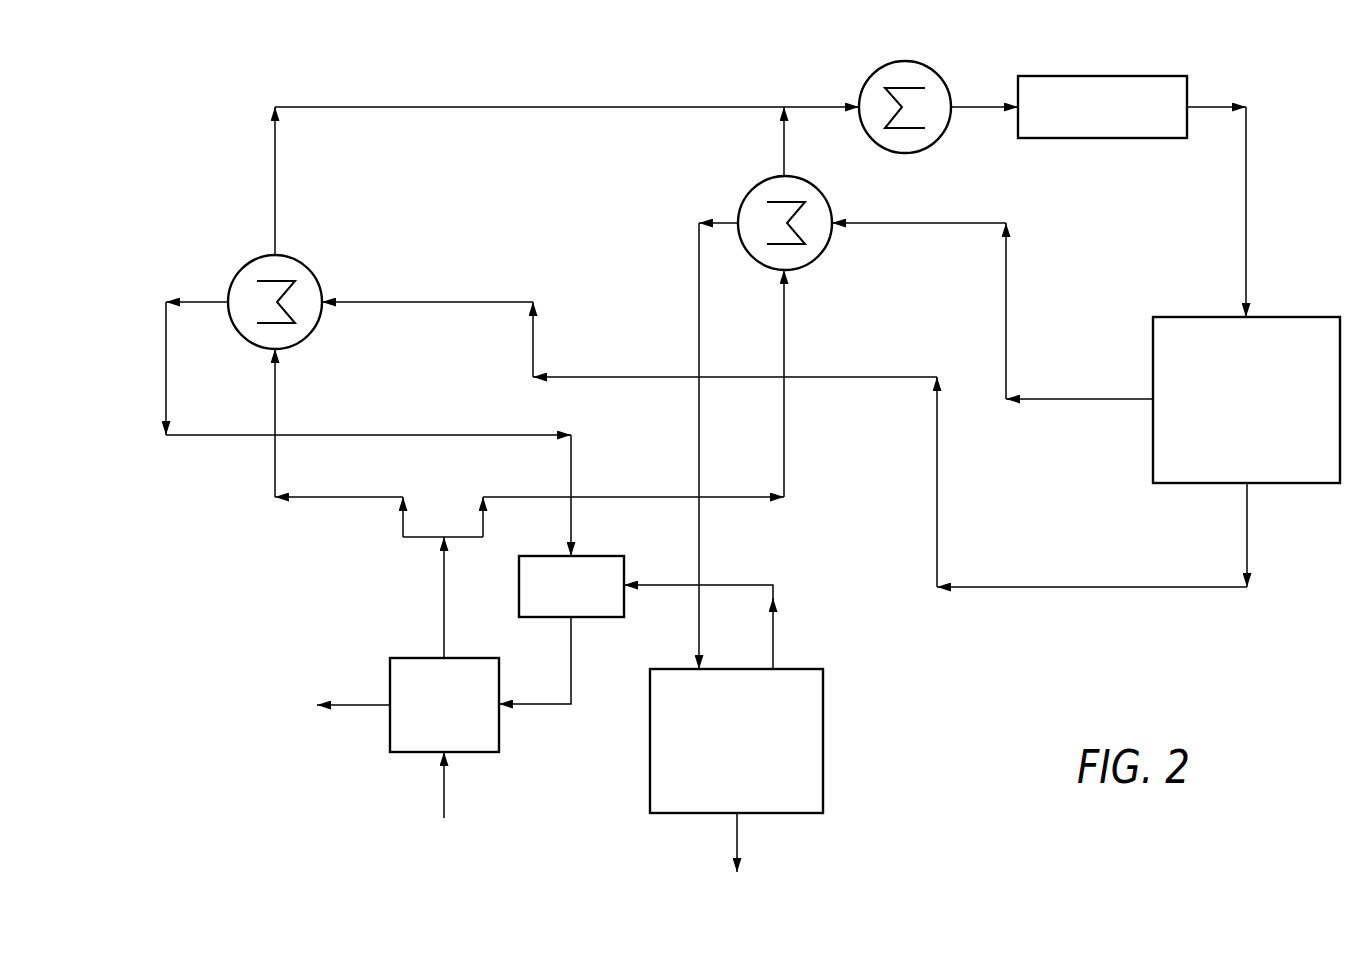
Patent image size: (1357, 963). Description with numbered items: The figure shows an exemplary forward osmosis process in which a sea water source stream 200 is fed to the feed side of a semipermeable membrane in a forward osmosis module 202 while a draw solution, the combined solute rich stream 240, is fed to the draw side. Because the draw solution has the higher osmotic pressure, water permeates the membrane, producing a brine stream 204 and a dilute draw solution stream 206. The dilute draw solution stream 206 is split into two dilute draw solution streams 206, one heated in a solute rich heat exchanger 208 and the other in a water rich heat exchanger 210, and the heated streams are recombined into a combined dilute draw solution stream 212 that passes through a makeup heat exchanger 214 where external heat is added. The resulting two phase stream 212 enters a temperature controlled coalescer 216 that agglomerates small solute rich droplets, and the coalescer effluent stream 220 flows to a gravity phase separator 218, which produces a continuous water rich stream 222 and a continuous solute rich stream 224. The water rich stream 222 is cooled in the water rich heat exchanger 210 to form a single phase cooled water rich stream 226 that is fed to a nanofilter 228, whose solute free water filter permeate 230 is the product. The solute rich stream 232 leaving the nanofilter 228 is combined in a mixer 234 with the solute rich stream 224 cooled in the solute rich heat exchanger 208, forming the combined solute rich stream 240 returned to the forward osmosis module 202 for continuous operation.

The sea water source stream 200 is at (444, 801).
The forward osmosis module 202 is at (444, 705).
The brine stream 204 is at (361, 703).
The dilute draw solution stream 206 is at (275, 392).
The solute rich heat exchanger 208 is at (240, 271).
The water rich heat exchanger 210 is at (825, 250).
The combined dilute draw solution stream 212 is at (822, 105).
The makeup heat exchanger 214 is at (905, 153).
The coalescer 216 is at (1102, 107).
The gravity phase separator 218 is at (1246, 400).
The coalescer effluent stream 220 is at (1247, 212).
The water rich stream 222 is at (1078, 399).
The solute rich stream 224 is at (1098, 587).
The cooled water rich stream 226 is at (699, 334).
The nanofilter 228 is at (736, 741).
The solute free water filter permeate 230 is at (735, 830).
The solute rich stream 232 is at (773, 647).
The mixer 234 is at (571, 586).
The combined solute rich stream 240 is at (548, 704).